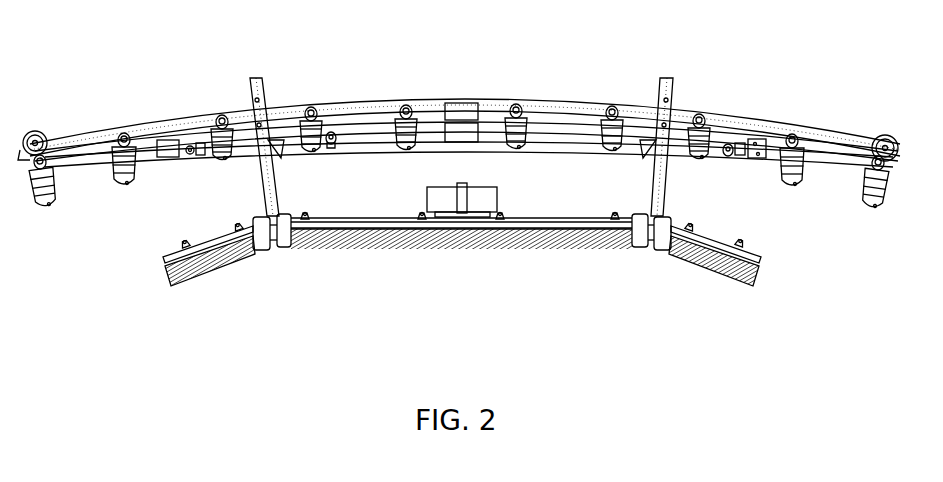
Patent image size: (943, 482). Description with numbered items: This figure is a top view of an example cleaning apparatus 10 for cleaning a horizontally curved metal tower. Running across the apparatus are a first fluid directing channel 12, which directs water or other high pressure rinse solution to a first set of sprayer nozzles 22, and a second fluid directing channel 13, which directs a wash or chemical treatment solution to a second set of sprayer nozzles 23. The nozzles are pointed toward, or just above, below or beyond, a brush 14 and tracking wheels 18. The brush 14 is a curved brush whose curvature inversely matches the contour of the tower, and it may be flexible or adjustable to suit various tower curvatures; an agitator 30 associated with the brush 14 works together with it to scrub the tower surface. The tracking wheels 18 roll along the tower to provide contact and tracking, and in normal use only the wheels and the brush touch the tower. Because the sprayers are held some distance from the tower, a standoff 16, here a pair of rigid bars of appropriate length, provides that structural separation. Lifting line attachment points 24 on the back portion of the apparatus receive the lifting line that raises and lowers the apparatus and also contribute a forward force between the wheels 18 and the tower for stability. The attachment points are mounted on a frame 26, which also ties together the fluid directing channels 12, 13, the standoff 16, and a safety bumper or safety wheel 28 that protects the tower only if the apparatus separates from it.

The cleaning apparatus 10 is at (700, 58).
The first fluid directing channel 12 is at (160, 128).
The second fluid directing channel 13 is at (275, 133).
The brush 14 is at (405, 242).
The standoff 16 is at (265, 187).
The tracking wheels 18 is at (265, 238).
The first set of sprayer nozzles 22 is at (130, 178).
The second set of sprayer nozzles 23 is at (331, 133).
The lifting line attachment point 24 is at (665, 92).
The frame 26 is at (775, 150).
The safety bumper or safety wheel 28 is at (42, 134).
The agitator 30 is at (480, 207).